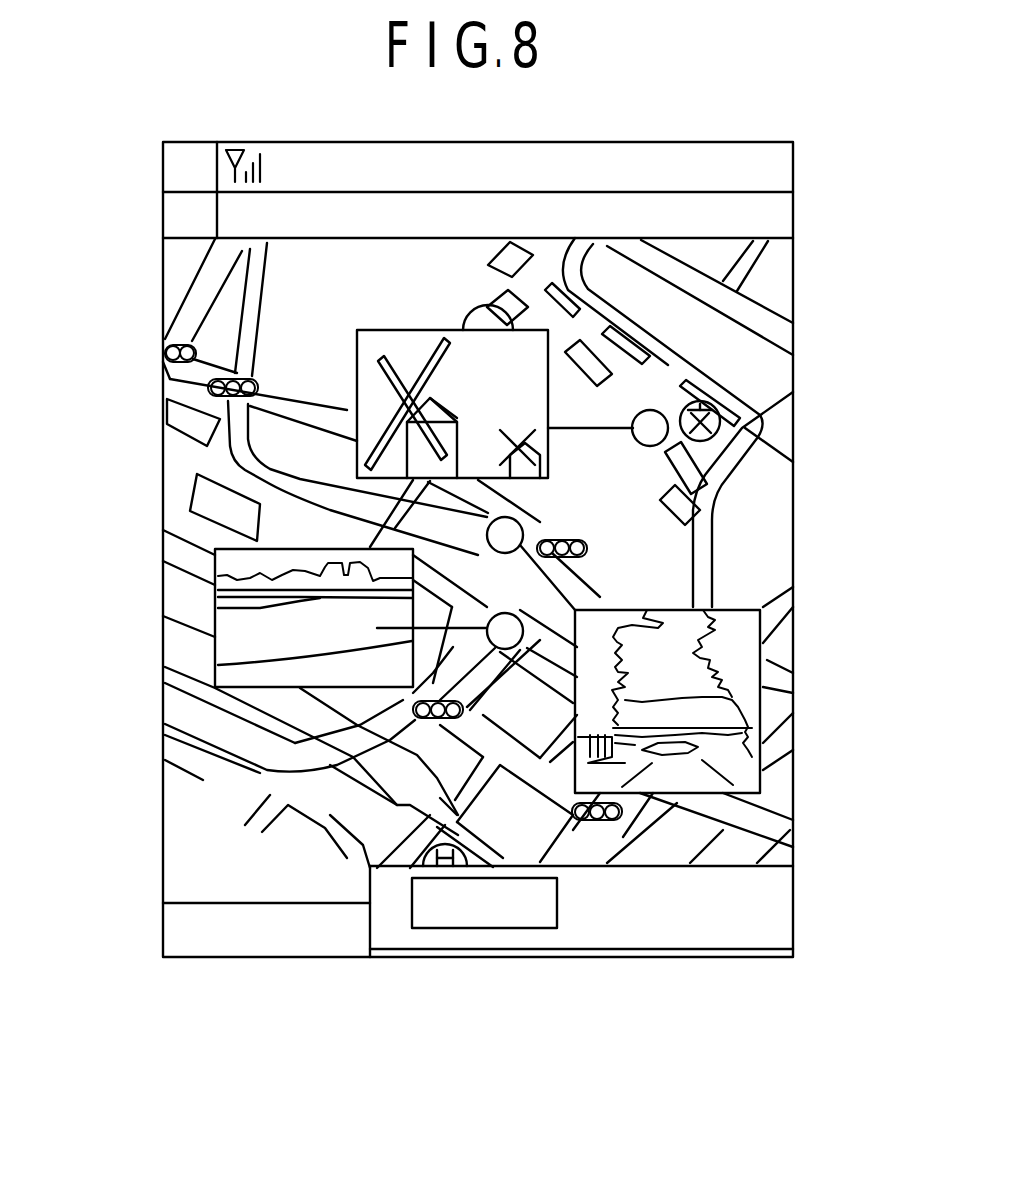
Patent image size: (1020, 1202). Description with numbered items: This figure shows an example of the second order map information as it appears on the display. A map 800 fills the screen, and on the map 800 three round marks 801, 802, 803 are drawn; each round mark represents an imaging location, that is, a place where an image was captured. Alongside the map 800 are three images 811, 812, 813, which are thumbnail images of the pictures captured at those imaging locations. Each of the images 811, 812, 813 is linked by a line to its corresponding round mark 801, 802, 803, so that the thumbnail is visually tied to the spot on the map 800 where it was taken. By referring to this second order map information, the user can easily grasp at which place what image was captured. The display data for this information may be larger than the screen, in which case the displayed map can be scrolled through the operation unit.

The map 800 is at (774, 988).
The round mark 801 is at (661, 441).
The round mark 802 is at (518, 522).
The round mark 803 is at (518, 618).
The image 811 is at (393, 327).
The image 812 is at (760, 708).
The image 813 is at (215, 632).